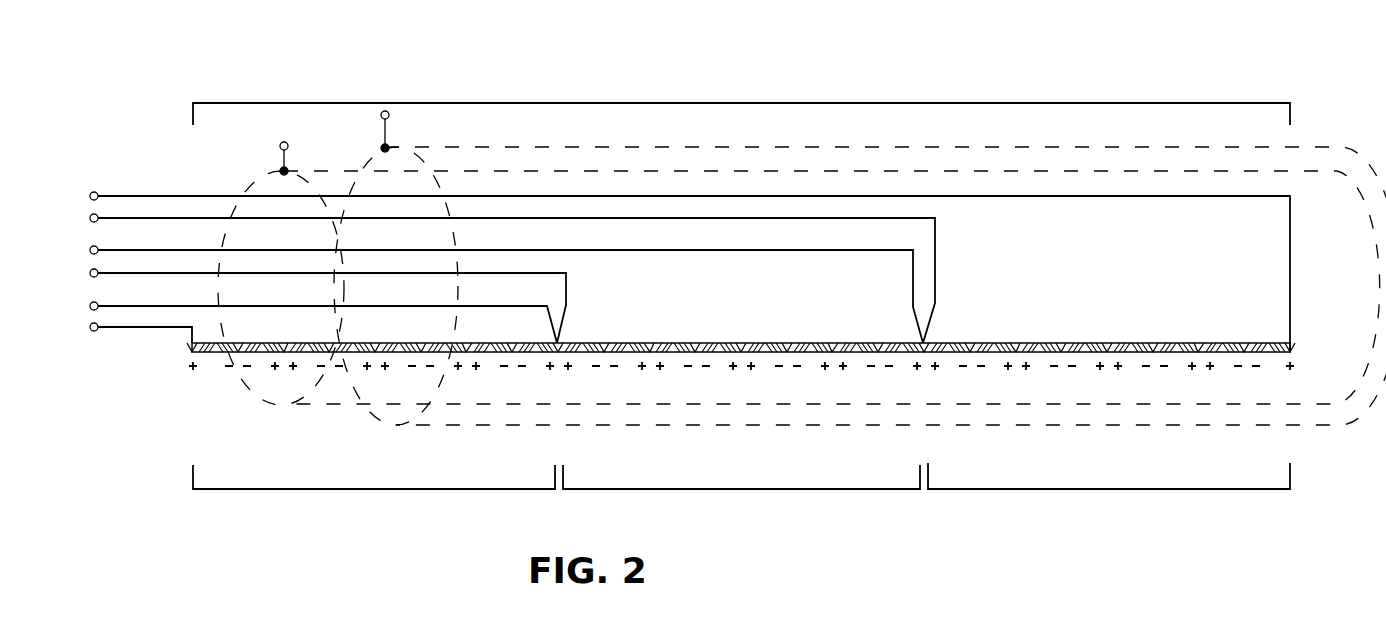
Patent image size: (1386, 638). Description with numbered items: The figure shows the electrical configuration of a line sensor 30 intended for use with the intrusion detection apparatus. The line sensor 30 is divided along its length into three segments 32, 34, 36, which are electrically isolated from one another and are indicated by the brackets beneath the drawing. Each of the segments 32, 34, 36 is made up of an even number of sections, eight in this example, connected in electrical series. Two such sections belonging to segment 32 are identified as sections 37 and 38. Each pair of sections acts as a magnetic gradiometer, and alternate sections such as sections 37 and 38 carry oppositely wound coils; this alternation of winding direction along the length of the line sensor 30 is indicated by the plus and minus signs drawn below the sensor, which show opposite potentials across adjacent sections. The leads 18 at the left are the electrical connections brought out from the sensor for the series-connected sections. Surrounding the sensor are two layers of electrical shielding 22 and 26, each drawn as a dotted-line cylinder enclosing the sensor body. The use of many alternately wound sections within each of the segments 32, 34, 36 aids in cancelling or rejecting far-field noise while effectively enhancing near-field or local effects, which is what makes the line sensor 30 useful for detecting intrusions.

The lead wires 18 is at (82, 184).
The layer of electrical shielding 22 is at (497, 170).
The layer of electrical shielding 26 is at (592, 147).
The line sensor 30 is at (733, 103).
The segment 32 is at (382, 489).
The segment 34 is at (730, 489).
The segment 36 is at (1144, 489).
The section 37 is at (208, 356).
The section 38 is at (265, 357).